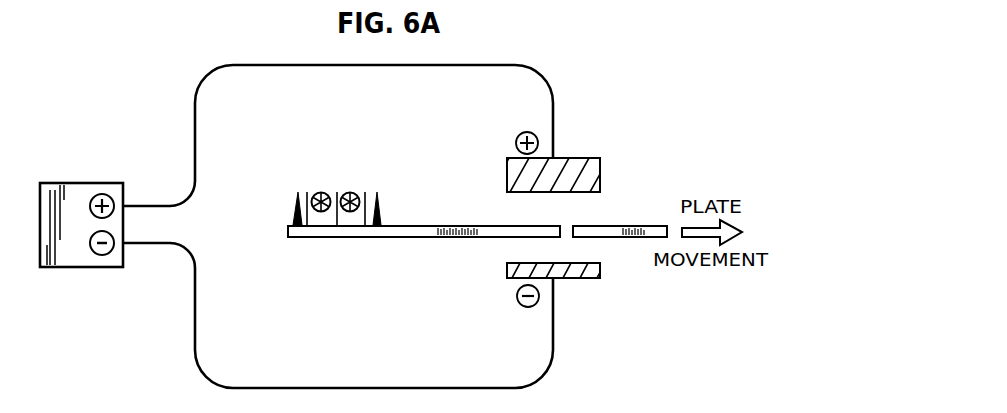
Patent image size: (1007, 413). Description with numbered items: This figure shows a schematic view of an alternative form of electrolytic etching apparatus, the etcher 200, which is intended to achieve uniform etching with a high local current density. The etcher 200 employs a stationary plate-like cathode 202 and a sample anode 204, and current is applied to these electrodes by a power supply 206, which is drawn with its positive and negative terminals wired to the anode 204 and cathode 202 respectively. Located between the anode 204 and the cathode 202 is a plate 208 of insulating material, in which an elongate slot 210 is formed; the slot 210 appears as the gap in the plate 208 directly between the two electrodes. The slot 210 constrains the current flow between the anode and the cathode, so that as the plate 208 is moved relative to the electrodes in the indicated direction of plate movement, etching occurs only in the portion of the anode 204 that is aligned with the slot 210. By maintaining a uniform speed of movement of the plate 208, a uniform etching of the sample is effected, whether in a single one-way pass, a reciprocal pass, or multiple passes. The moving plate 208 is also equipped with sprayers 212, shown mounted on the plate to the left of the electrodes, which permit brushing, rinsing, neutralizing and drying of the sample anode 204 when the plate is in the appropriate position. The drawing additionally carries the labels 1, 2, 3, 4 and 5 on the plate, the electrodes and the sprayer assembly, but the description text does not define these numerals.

The plate 1 is at (477, 204).
The upper electrode assembly 2 is at (535, 152).
The lower electrode assembly 3 is at (539, 295).
The plate segment 4 is at (580, 211).
The fixture on plate 5 is at (348, 174).
The etcher 200 is at (567, 199).
The cathode 202 is at (507, 280).
The sample anode 204 is at (507, 167).
The power supply 206 is at (83, 190).
The plate 208 is at (408, 232).
The slot 210 is at (566, 222).
The sprayers 212 is at (351, 193).